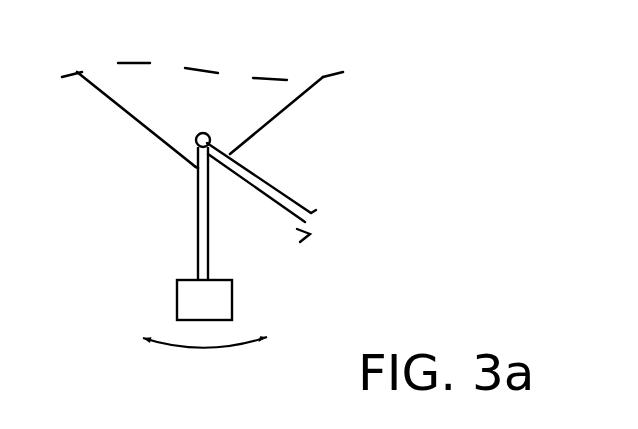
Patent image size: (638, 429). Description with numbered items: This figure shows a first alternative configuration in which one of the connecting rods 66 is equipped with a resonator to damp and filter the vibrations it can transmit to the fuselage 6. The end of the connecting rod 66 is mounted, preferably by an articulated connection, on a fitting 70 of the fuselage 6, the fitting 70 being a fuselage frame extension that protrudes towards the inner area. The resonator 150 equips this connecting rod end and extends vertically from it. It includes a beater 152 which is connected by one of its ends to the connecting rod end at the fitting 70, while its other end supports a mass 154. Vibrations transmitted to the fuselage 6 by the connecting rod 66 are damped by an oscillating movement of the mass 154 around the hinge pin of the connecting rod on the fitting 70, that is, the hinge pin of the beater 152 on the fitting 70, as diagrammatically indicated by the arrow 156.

The fuselage 6 is at (215, 68).
The fitting 70 is at (131, 105).
The connecting rod 66 is at (271, 177).
The resonator 150 is at (196, 226).
The beater 152 is at (210, 240).
The mass 154 is at (227, 300).
The arrow 156 is at (212, 348).